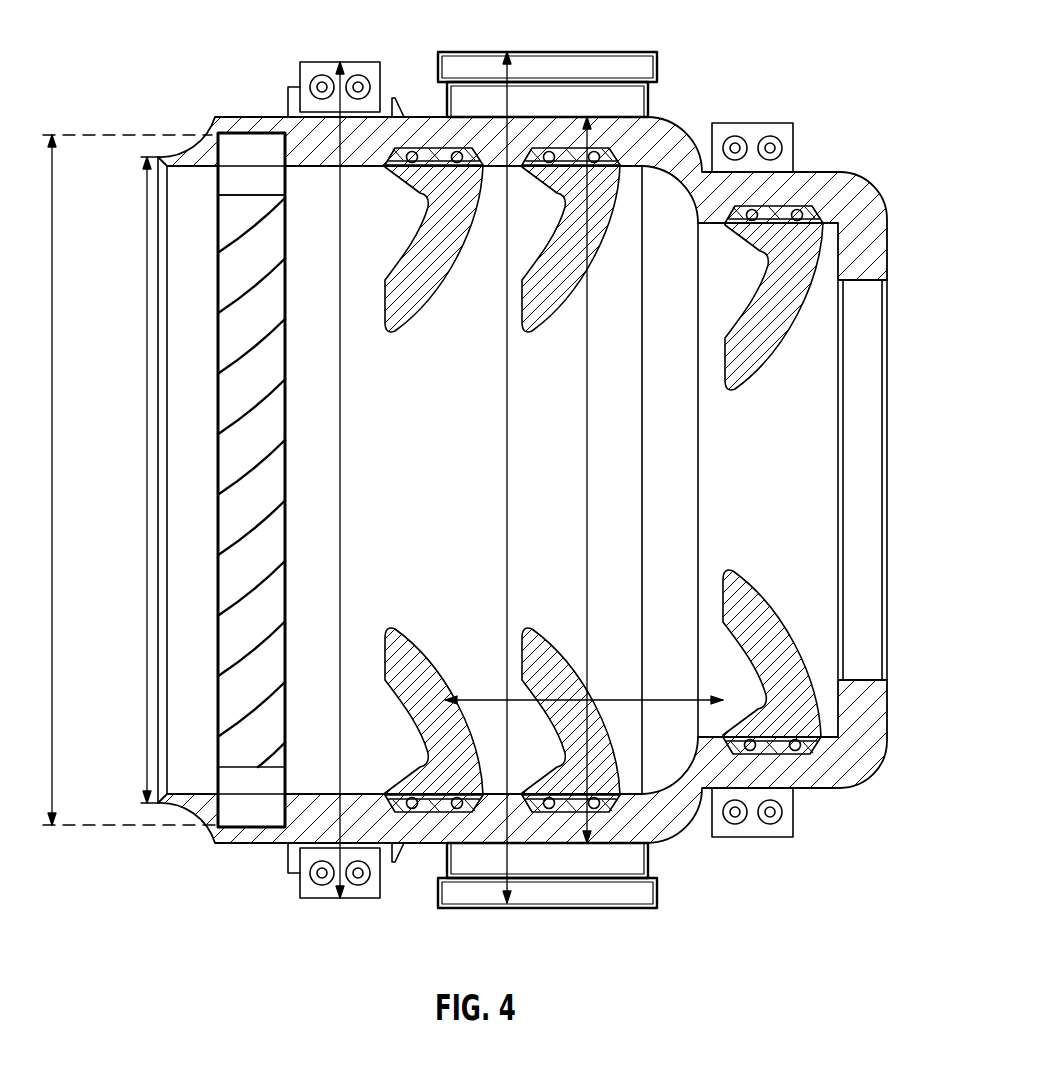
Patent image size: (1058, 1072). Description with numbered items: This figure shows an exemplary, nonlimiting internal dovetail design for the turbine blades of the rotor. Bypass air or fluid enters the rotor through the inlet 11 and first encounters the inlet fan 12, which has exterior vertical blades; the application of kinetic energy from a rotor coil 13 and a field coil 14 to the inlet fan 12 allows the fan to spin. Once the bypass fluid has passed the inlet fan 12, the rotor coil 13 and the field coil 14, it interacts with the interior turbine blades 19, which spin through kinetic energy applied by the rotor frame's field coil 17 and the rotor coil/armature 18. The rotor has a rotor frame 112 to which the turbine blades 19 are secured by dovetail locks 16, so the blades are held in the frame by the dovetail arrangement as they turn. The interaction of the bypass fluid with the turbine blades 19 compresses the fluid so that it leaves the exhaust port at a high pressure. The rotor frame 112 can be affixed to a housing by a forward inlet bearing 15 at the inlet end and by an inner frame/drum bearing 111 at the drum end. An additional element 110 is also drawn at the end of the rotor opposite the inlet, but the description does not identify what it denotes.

The inlet 11 is at (147, 457).
The inlet fan 12 is at (205, 752).
The rotor coil 13 is at (230, 177).
The field coil 14 is at (52, 347).
The forward inlet bearing 15 is at (342, 423).
The dovetail locks 16 is at (438, 822).
The rotor frame field coil 17 is at (507, 480).
The rotor coil/armature 18 is at (587, 415).
The interior turbine blades 19 is at (607, 700).
The end plate 110 is at (887, 305).
The inner frame/drum bearing 111 is at (795, 148).
The rotor frame 112 is at (682, 158).